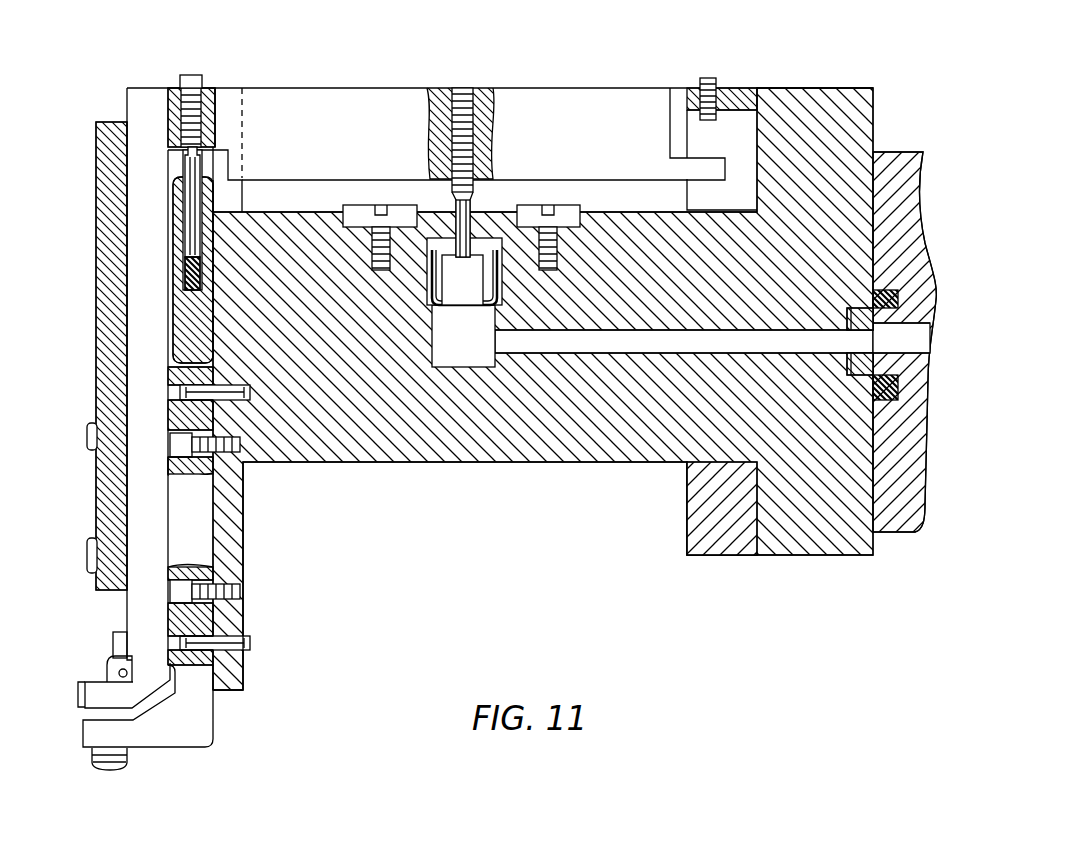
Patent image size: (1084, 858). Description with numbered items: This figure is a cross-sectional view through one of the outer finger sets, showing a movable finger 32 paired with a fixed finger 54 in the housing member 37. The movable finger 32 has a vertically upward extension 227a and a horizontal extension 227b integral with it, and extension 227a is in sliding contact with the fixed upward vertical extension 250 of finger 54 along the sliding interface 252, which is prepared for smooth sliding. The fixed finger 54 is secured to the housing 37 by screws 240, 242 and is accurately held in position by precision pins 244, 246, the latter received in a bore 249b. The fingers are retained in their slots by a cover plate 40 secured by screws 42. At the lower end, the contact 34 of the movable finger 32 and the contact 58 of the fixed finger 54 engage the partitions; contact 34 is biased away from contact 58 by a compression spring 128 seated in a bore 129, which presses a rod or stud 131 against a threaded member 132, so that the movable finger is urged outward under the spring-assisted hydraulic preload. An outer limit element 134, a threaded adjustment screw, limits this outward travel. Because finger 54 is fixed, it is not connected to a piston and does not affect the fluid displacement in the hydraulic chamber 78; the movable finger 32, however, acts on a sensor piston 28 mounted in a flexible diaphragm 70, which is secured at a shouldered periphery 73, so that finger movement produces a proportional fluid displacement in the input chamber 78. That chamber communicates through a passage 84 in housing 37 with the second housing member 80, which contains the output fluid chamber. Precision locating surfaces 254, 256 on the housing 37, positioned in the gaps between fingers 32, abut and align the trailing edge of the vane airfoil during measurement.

The sensor piston 28 is at (475, 282).
The movable upper finger 32 is at (97, 703).
The contact 34 is at (107, 668).
The housing member 37 is at (372, 463).
The cover plate 40 is at (102, 243).
The screws 42 is at (88, 540).
The fixed finger 54 is at (157, 742).
The contact 58 is at (108, 771).
The flexible diaphragm 70 is at (467, 308).
The shouldered periphery 73 is at (517, 208).
The input chamber 78 is at (480, 355).
The second housing member 80 is at (898, 535).
The passage 84 is at (616, 355).
The compression spring 128 is at (178, 300).
The bore 129 is at (186, 263).
The stud 131 is at (197, 232).
The threaded member 132 is at (204, 80).
The outer limit element 134 is at (714, 82).
The vertically upward extension 227a is at (192, 550).
The horizontal extension 227b is at (362, 98).
The screw 240 is at (248, 468).
The screw 242 is at (244, 590).
The pin 244 is at (193, 386).
The pin alignment member 246 is at (241, 643).
The bore 249b is at (247, 389).
The fixed upward vertical extension 250 is at (232, 537).
The sliding interface 252 is at (214, 515).
The precision locating surface 254 is at (113, 640).
The precision locating surface 256 is at (86, 637).